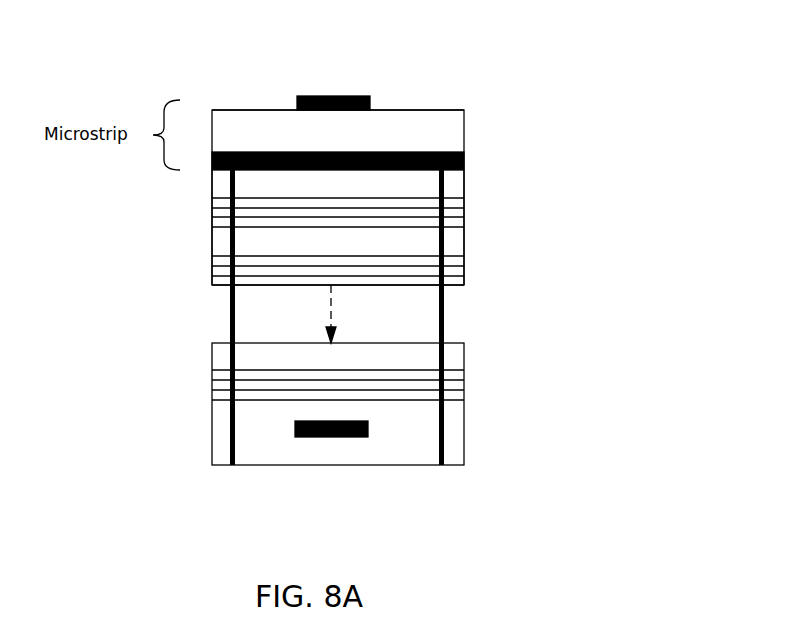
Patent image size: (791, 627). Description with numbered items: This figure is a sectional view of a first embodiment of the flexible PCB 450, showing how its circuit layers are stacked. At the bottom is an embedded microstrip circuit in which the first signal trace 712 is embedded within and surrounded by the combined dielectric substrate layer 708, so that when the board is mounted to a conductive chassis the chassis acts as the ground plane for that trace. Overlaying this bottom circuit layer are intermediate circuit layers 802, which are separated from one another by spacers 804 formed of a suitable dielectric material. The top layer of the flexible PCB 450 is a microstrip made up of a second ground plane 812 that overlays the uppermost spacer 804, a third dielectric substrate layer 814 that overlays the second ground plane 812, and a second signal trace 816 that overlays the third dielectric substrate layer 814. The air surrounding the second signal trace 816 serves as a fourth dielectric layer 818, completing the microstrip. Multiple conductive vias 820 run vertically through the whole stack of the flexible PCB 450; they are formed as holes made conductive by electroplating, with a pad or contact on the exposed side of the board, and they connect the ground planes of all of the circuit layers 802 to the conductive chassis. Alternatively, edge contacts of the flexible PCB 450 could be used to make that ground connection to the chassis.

The flexible PCB 450 is at (449, 90).
The combined dielectric substrate layer 708 is at (277, 454).
The first signal trace 712 is at (335, 437).
The intermediate circuit layers 802 is at (212, 215).
The spacers 804 is at (464, 185).
The second ground plane 812 is at (465, 157).
The third dielectric substrate layer 814 is at (260, 144).
The second signal trace 816 is at (328, 96).
The fourth dielectric layer 818 is at (258, 98).
The conductive vias 820 is at (232, 293).